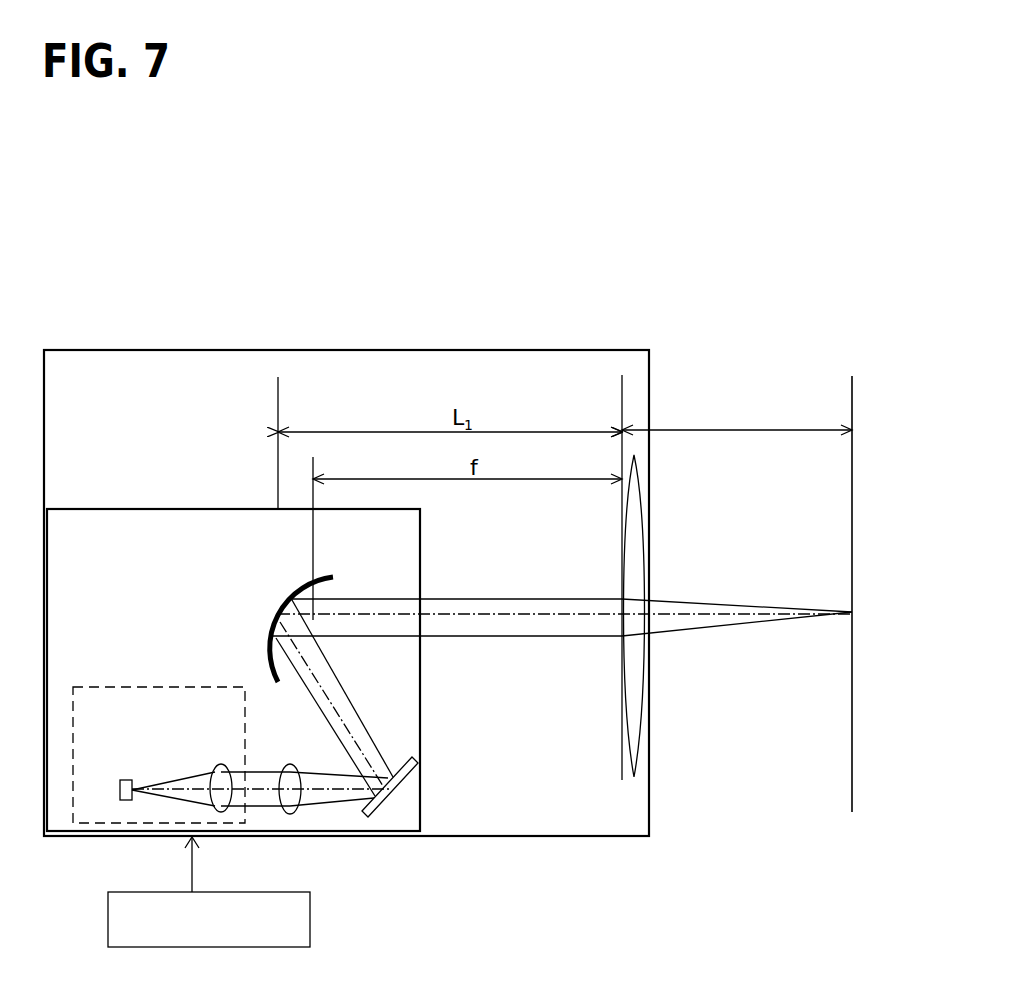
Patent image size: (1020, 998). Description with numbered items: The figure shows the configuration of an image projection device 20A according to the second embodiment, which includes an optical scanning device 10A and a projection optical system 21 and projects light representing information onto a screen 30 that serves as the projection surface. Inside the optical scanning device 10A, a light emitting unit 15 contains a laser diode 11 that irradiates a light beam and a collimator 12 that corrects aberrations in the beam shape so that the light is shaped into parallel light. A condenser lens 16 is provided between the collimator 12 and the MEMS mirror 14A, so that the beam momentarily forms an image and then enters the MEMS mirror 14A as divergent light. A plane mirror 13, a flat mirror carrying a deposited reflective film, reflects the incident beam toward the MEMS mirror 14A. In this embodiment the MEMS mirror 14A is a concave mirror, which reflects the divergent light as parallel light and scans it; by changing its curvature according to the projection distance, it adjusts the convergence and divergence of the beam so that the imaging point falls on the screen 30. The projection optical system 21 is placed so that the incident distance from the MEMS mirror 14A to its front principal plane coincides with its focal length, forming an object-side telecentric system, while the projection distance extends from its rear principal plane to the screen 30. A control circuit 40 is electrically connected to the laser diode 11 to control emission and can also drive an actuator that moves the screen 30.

The image projection device 20A is at (420, 350).
The optical scanning device 10A is at (163, 508).
The screen 30 is at (852, 402).
The projection optical system 21 is at (648, 474).
The MEMS mirror 14A is at (268, 643).
The light emitting unit 15 is at (115, 687).
The laser diode 11 is at (128, 780).
The collimator 12 is at (221, 765).
The condenser lens 16 is at (290, 765).
The plane mirror 13 is at (398, 784).
The control circuit 40 is at (285, 892).